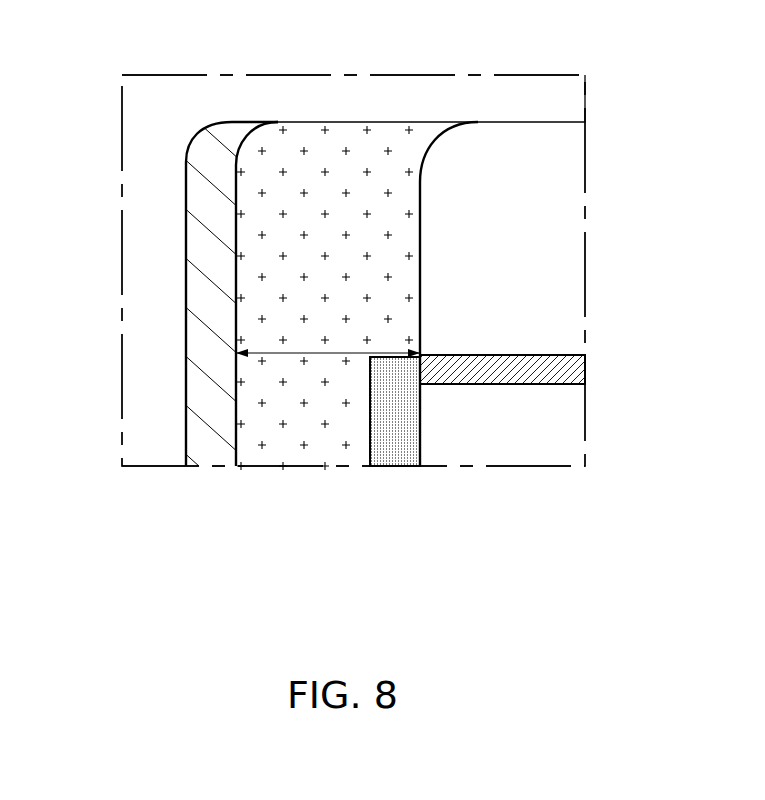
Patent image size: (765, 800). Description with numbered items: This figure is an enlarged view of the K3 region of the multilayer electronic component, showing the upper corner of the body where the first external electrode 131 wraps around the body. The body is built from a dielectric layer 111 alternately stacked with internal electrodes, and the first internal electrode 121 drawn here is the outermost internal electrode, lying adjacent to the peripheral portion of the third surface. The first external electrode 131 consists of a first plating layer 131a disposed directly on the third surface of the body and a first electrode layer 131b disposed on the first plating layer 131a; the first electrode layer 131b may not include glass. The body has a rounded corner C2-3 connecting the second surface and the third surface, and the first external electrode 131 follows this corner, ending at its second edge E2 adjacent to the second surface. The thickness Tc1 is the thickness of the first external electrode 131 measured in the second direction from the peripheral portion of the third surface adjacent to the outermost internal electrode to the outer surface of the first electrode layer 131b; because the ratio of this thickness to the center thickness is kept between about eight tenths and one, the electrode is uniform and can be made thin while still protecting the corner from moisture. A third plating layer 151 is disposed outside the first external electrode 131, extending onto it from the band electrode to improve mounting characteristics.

The dielectric layer 111 is at (568, 434).
The first internal electrode 121 is at (568, 370).
The first external electrode 131 is at (415, 537).
The first plating layer 131a is at (392, 467).
The first electrode layer 131b is at (307, 467).
The third plating layer 151 is at (212, 467).
The second edge E2 is at (257, 134).
The 2-3th corner C2-3 is at (446, 138).
The thickness Tc1 is at (327, 352).
The K3 region K3 is at (372, 626).